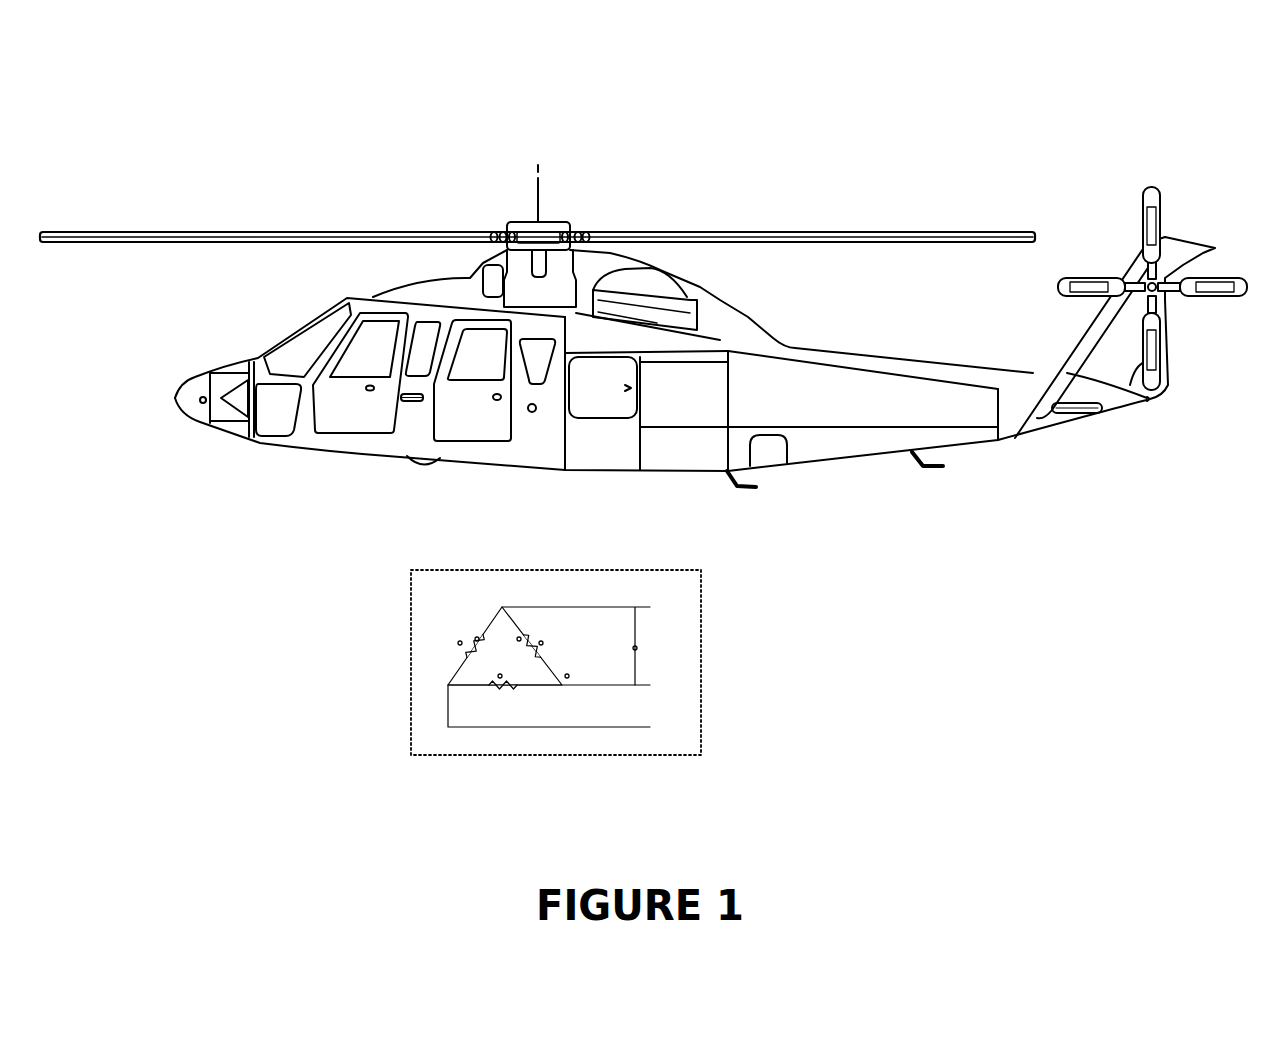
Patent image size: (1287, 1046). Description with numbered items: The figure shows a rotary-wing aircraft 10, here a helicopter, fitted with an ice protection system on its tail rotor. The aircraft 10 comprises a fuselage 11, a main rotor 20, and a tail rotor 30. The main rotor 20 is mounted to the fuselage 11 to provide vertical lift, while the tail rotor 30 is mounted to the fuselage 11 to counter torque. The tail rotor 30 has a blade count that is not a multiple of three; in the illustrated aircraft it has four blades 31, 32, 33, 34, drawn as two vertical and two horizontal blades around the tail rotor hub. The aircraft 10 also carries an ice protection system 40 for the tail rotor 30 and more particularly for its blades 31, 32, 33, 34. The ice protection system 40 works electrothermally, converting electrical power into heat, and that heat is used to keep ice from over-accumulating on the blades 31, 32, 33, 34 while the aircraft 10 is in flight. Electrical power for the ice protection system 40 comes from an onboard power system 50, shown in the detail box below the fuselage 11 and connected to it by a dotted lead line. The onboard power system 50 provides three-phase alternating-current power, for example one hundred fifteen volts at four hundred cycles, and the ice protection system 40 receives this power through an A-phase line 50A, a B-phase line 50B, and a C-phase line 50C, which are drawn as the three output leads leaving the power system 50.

The rotory-wing aircraft 10 is at (237, 184).
The fuselage 11 is at (343, 302).
The main rotor 20 is at (660, 228).
The tail rotor 30 is at (1167, 218).
The blade 31 is at (1146, 212).
The blade 32 is at (1227, 287).
The blade 33 is at (1160, 363).
The blade 34 is at (1073, 287).
The ice protection system 40 is at (1140, 228).
The onboard power system 50 is at (802, 388).
The A-phase line 50A is at (598, 644).
The B-phase line 50B is at (571, 689).
The C-phase line 50C is at (571, 714).